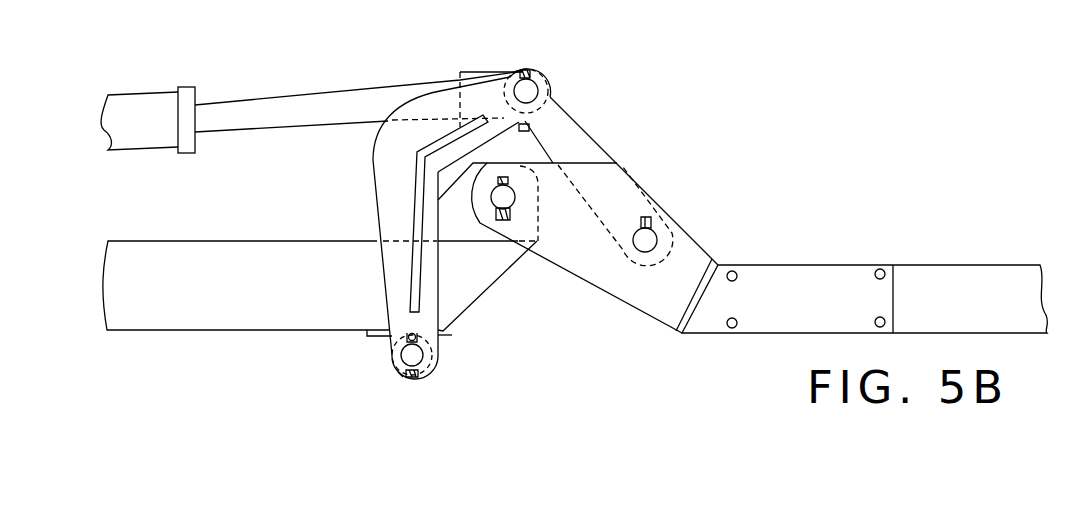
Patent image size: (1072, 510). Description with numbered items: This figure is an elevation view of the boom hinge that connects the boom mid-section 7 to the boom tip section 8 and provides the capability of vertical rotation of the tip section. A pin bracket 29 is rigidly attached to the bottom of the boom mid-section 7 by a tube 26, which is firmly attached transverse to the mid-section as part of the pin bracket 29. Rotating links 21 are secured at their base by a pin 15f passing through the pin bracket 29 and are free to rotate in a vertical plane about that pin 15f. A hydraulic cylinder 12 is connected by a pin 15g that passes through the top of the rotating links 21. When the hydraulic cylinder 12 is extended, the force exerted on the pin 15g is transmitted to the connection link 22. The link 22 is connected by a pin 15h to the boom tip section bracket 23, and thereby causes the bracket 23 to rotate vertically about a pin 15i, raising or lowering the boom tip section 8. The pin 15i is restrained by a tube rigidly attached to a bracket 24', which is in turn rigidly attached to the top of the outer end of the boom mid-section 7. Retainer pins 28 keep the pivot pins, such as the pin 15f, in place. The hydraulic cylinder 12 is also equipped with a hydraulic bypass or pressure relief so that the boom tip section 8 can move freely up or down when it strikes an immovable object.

The boom mid-section 7 is at (246, 302).
The boom tip section 8 is at (958, 305).
The hydraulic cylinder 12 is at (148, 132).
The pin 15f is at (414, 354).
The pin 15g is at (531, 89).
The pin 15h is at (648, 231).
The pin 15i is at (513, 199).
The rotating links 21 is at (399, 201).
The connection link 22 is at (557, 151).
The boom tip section bracket 23 is at (648, 303).
The bracket 24' is at (527, 202).
The tube 26 is at (398, 380).
The retainer pin 28 is at (526, 71).
The pin bracket 29 is at (373, 338).